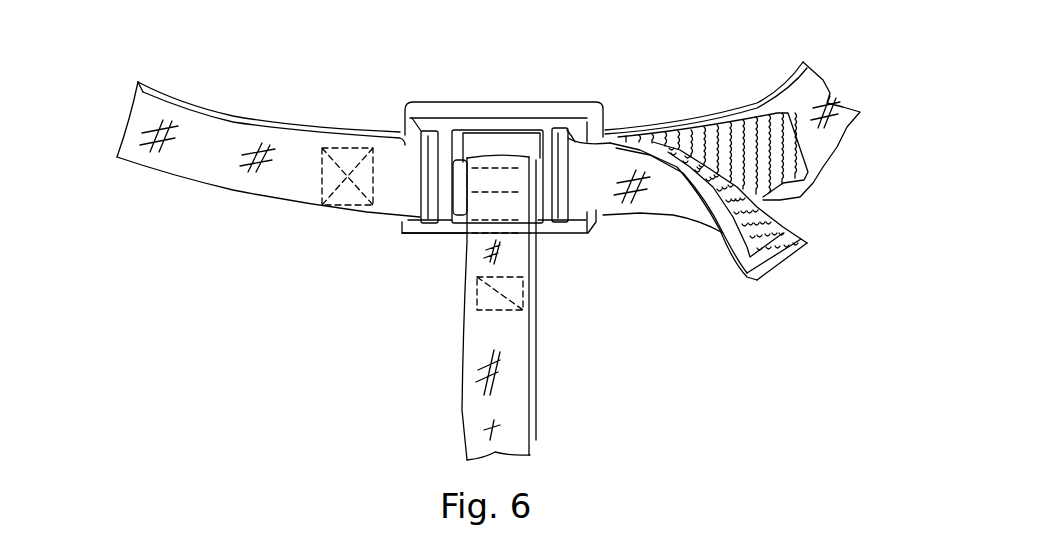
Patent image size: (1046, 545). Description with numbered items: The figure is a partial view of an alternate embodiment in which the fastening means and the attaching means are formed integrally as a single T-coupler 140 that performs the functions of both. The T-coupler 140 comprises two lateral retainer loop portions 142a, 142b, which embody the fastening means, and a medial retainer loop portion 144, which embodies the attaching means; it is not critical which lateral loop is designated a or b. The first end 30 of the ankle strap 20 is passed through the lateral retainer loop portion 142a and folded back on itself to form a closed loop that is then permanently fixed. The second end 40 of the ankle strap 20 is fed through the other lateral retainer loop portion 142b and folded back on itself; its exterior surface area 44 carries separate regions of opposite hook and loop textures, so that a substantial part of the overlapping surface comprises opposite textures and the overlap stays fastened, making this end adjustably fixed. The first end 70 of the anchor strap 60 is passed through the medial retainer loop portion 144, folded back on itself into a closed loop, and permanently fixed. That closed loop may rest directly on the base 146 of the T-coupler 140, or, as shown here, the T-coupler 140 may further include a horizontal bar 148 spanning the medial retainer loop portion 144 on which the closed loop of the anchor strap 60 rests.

The ankle strap 20 is at (203, 127).
The first end of ankle strap 30 is at (377, 210).
The second end of ankle strap 40 is at (753, 272).
The exterior surface area 44 is at (780, 227).
The anchor strap 60 is at (513, 363).
The first end of anchor strap 70 is at (513, 243).
The T-coupler 140 is at (445, 247).
The lateral retainer loop portion 142a is at (428, 173).
The lateral retainer loop portion 142b is at (560, 130).
The medial retainer loop portion 144 is at (487, 142).
The base of T-coupler 146 is at (457, 230).
The horizontal bar 148 is at (457, 177).